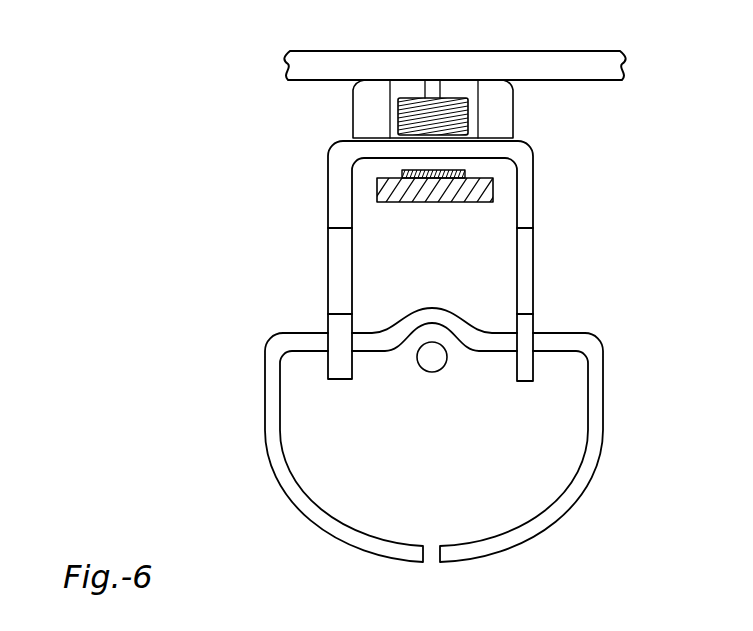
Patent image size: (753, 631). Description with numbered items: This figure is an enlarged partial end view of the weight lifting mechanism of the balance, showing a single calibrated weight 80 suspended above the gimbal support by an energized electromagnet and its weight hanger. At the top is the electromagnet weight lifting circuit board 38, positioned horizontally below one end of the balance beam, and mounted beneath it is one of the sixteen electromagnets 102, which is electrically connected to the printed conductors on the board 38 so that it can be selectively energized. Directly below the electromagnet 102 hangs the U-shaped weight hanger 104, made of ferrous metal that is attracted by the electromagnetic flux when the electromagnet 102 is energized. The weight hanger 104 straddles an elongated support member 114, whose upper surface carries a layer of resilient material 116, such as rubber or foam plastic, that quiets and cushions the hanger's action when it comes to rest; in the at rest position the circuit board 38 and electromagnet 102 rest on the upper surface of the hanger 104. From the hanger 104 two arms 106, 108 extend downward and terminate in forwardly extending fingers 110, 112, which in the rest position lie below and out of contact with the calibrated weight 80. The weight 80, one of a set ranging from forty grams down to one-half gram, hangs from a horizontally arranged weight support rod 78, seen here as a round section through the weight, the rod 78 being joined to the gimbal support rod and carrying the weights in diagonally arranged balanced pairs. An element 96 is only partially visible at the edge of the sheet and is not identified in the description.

The electromagnet weight lifting circuit board 38 is at (550, 60).
The weight support rod 78 is at (435, 359).
The calibrated weight 80 is at (592, 408).
The partial numeral (off-sheet component) 96 is at (687, 6).
The electromagnet 102 is at (505, 108).
The weight hanger 104 is at (528, 199).
The downwardly extending arm 106 is at (525, 272).
The downwardly extending arm 108 is at (340, 262).
The forwardly extending finger 110 is at (527, 350).
The forwardly extending finger 112 is at (338, 340).
The elongated support member 114 is at (457, 188).
The layer of resilient material 116 is at (412, 173).